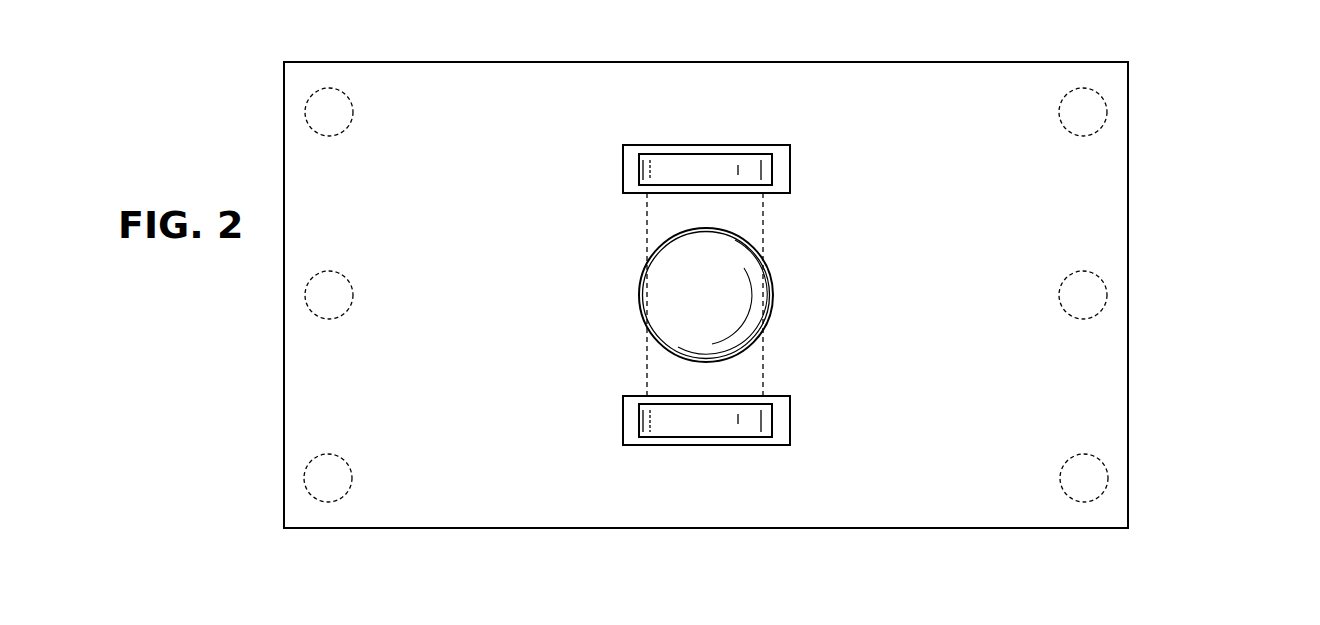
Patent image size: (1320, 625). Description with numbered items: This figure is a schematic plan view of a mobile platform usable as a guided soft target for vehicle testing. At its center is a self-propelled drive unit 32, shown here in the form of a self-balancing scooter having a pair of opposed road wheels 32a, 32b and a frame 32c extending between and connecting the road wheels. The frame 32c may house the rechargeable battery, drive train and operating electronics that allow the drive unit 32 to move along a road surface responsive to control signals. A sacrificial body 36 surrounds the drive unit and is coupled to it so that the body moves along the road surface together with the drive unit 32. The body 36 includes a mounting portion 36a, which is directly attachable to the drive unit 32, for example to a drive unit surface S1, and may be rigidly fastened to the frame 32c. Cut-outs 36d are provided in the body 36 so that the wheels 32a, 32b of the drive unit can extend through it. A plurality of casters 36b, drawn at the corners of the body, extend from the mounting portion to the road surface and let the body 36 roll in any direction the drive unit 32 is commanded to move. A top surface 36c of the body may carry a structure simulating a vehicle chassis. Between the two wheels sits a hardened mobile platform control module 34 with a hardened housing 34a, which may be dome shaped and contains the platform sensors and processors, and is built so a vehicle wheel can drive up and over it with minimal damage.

The self-propelled drive unit 32 is at (662, 227).
The road wheel 32a is at (697, 168).
The road wheel 32b is at (726, 420).
The frame 32c is at (764, 212).
The hardened mobile platform control module 34 is at (638, 282).
The hardened housing 34a is at (712, 303).
The sacrificial body 36 is at (1132, 140).
The mounting portion 36a is at (330, 180).
The casters 36b is at (1108, 470).
The top surface 36c is at (487, 129).
The cut-outs 36d is at (652, 145).
The drive unit surface S1 is at (746, 190).